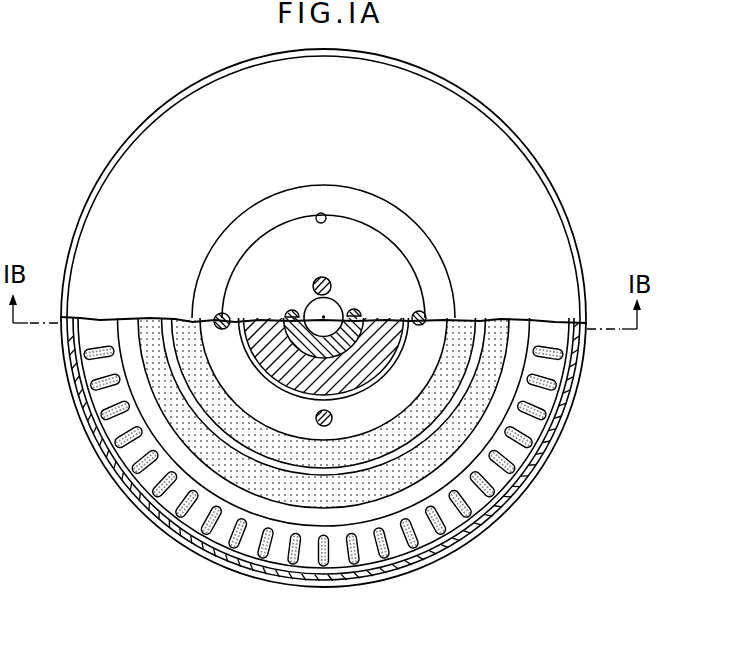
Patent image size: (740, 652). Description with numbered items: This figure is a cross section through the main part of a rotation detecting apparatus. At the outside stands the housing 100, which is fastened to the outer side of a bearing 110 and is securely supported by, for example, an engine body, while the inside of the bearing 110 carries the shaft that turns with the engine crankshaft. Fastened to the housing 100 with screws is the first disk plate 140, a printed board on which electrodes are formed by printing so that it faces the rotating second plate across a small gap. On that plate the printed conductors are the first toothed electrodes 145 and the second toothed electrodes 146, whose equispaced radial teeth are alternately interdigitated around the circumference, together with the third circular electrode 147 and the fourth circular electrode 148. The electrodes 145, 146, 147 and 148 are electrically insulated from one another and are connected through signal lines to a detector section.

The housing 100 is at (473, 537).
The bearing 110 is at (263, 356).
The first disk plate 140 is at (555, 368).
The first toothed electrodes 145 is at (542, 407).
The second toothed electrodes 146 is at (537, 468).
The third circular electrode 147 is at (407, 484).
The fourth circular electrode 148 is at (397, 440).